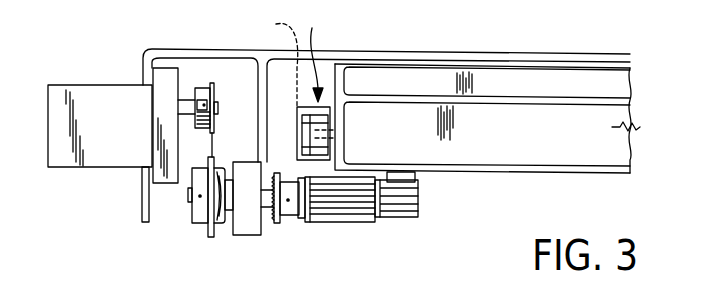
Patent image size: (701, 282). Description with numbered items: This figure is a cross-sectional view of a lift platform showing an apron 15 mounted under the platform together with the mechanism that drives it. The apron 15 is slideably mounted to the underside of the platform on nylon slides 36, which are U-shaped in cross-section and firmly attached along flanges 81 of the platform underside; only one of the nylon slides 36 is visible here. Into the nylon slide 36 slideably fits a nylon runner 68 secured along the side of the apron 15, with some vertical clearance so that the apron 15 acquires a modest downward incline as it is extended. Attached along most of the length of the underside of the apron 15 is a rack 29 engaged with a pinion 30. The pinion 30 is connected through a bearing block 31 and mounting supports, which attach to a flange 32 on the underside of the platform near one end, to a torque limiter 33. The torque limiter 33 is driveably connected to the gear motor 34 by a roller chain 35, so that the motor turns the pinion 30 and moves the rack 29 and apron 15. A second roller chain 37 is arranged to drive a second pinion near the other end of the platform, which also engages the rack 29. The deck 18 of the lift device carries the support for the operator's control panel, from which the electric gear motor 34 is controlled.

The apron 15 is at (582, 174).
The deck 18 is at (432, 50).
The rack 29 is at (416, 180).
The pinion 30 is at (420, 207).
The bearing block 31 is at (353, 223).
The flange 32 is at (257, 88).
The torque limiter 33 is at (200, 225).
The gear motor 34 is at (97, 168).
The roller chain 35 is at (228, 157).
The nylon slide 36 is at (321, 51).
The second roller chain 37 is at (278, 225).
The nylon runner 68 is at (331, 118).
The flange 81 is at (273, 60).